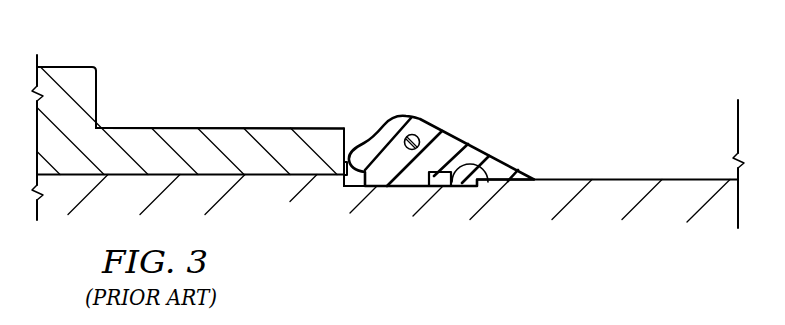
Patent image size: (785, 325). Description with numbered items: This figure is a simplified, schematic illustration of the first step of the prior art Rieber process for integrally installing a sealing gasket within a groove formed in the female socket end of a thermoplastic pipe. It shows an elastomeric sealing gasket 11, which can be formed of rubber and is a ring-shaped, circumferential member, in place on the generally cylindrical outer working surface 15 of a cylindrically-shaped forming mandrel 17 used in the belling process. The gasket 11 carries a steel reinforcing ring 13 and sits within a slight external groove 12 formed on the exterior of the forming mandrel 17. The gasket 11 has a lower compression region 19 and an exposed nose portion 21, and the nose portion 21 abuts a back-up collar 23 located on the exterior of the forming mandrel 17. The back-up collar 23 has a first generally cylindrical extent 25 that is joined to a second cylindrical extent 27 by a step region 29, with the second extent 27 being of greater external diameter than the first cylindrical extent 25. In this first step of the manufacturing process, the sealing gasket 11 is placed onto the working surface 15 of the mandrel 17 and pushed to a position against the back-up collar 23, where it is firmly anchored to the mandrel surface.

The elastomeric sealing gasket 11 is at (441, 167).
The external groove 12 is at (485, 186).
The steel reinforcing ring 13 is at (428, 123).
The outer working surface 15 is at (567, 179).
The forming mandrel 17 is at (544, 164).
The lower compression region 19 is at (432, 186).
The exposed nose portion 21 is at (343, 157).
The back-up collar 23 is at (221, 167).
The first generally cylindrical extent 25 is at (220, 128).
The second cylindrical extent 27 is at (189, 135).
The step region 29 is at (97, 85).